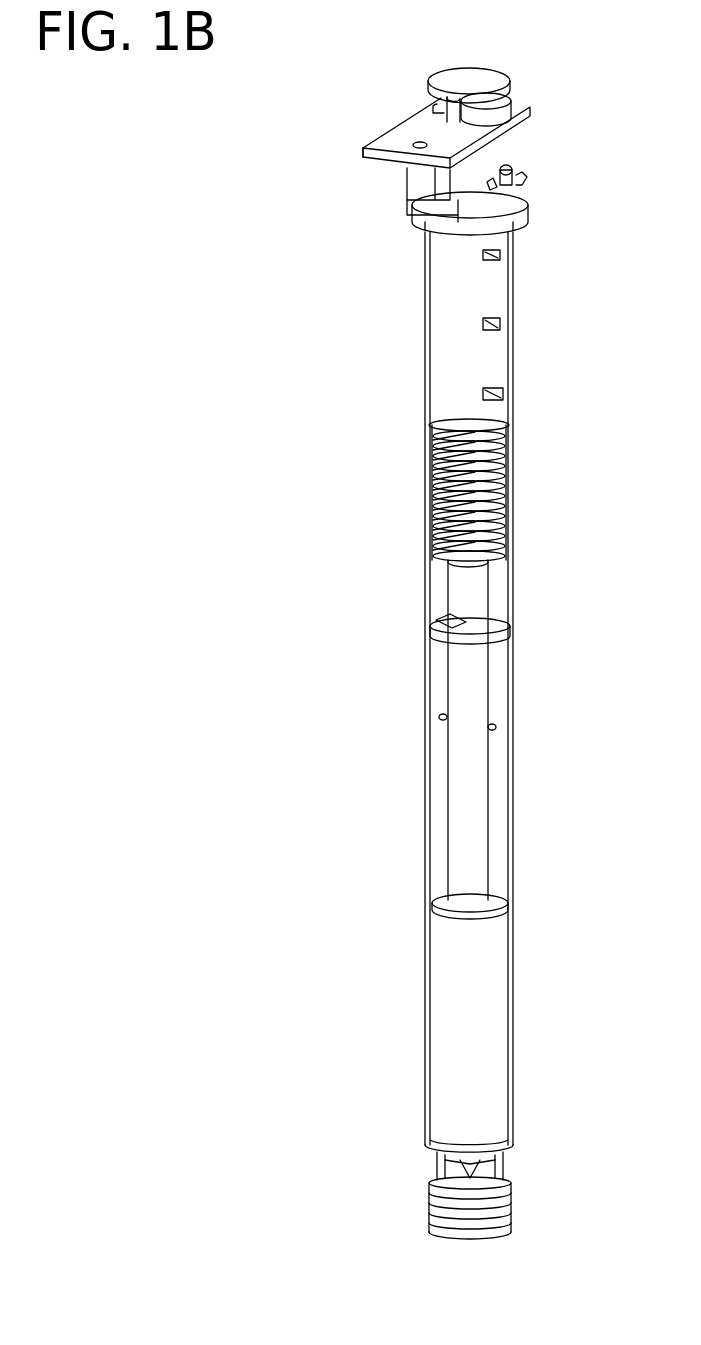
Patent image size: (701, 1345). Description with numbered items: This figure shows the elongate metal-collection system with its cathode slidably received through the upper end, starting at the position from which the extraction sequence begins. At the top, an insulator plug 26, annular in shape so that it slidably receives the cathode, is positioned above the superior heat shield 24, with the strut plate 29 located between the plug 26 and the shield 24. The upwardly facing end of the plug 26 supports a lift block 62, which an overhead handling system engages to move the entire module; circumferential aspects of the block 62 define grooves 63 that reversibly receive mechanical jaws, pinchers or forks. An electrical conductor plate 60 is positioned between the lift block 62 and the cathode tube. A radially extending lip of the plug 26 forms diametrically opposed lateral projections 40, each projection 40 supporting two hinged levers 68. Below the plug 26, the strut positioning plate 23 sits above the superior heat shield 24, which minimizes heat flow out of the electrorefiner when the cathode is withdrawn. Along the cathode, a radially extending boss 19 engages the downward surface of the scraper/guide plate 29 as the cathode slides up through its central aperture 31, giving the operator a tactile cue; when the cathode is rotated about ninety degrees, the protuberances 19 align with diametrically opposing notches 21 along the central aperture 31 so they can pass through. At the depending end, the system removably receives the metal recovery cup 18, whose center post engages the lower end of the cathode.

The lift block 62 is at (462, 82).
The electrical conductor plate 60 is at (397, 133).
The grooves 63 is at (435, 107).
The hinged levers 68 is at (525, 184).
The lateral projections 40 is at (408, 230).
The insulator plug 26 is at (469, 688).
The strut positioning plate 23 is at (508, 426).
The superior heat shield 24 is at (437, 490).
The notches 21 is at (503, 566).
The central aperture 31 is at (511, 637).
The scraper/guide plate 29 is at (440, 630).
The radially extending boss 19 is at (496, 726).
The metal recovery cup 18 is at (469, 1124).